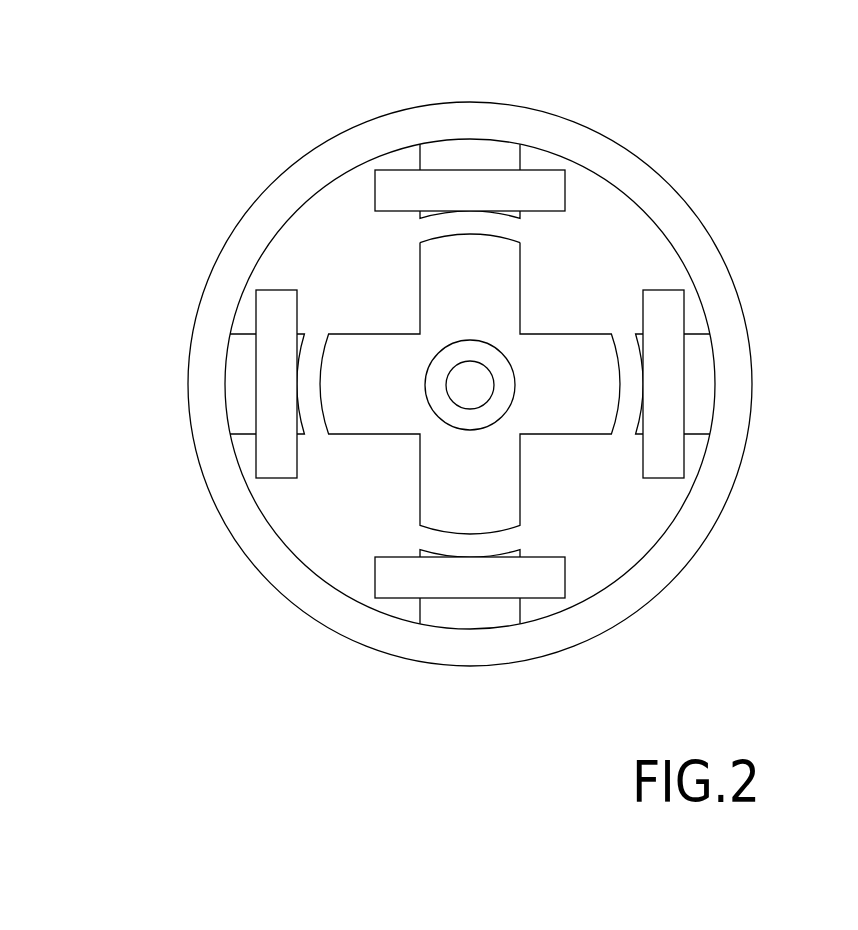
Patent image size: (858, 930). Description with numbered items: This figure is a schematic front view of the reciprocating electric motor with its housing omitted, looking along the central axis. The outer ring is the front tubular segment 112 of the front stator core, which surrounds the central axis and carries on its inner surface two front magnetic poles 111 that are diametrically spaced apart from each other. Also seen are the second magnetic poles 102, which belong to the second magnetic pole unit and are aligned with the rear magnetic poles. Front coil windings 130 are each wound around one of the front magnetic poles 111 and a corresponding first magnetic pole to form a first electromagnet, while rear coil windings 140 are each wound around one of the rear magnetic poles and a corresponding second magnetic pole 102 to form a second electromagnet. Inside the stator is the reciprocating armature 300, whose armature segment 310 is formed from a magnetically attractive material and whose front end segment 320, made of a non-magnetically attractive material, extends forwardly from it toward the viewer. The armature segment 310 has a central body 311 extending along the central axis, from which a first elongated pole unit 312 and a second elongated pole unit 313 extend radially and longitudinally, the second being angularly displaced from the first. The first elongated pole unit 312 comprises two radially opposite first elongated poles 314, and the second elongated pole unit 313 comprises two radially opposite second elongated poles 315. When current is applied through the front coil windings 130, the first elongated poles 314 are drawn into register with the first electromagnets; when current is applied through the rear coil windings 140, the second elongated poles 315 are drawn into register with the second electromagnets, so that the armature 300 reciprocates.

The second magnetic pole 102 is at (444, 162).
The front magnetic pole 111 is at (243, 390).
The front tubular segment 112 is at (715, 283).
The front coil winding 130 is at (267, 312).
The rear coil winding 140 is at (540, 185).
The reciprocating armature 300 is at (560, 470).
The armature segment 310 is at (503, 257).
The central body 311 is at (503, 430).
The first elongated pole unit 312 is at (580, 447).
The second elongated pole unit 313 is at (528, 312).
The first elongated pole 314 is at (343, 425).
The second elongated pole 315 is at (543, 263).
The front end segment 320 is at (469, 389).